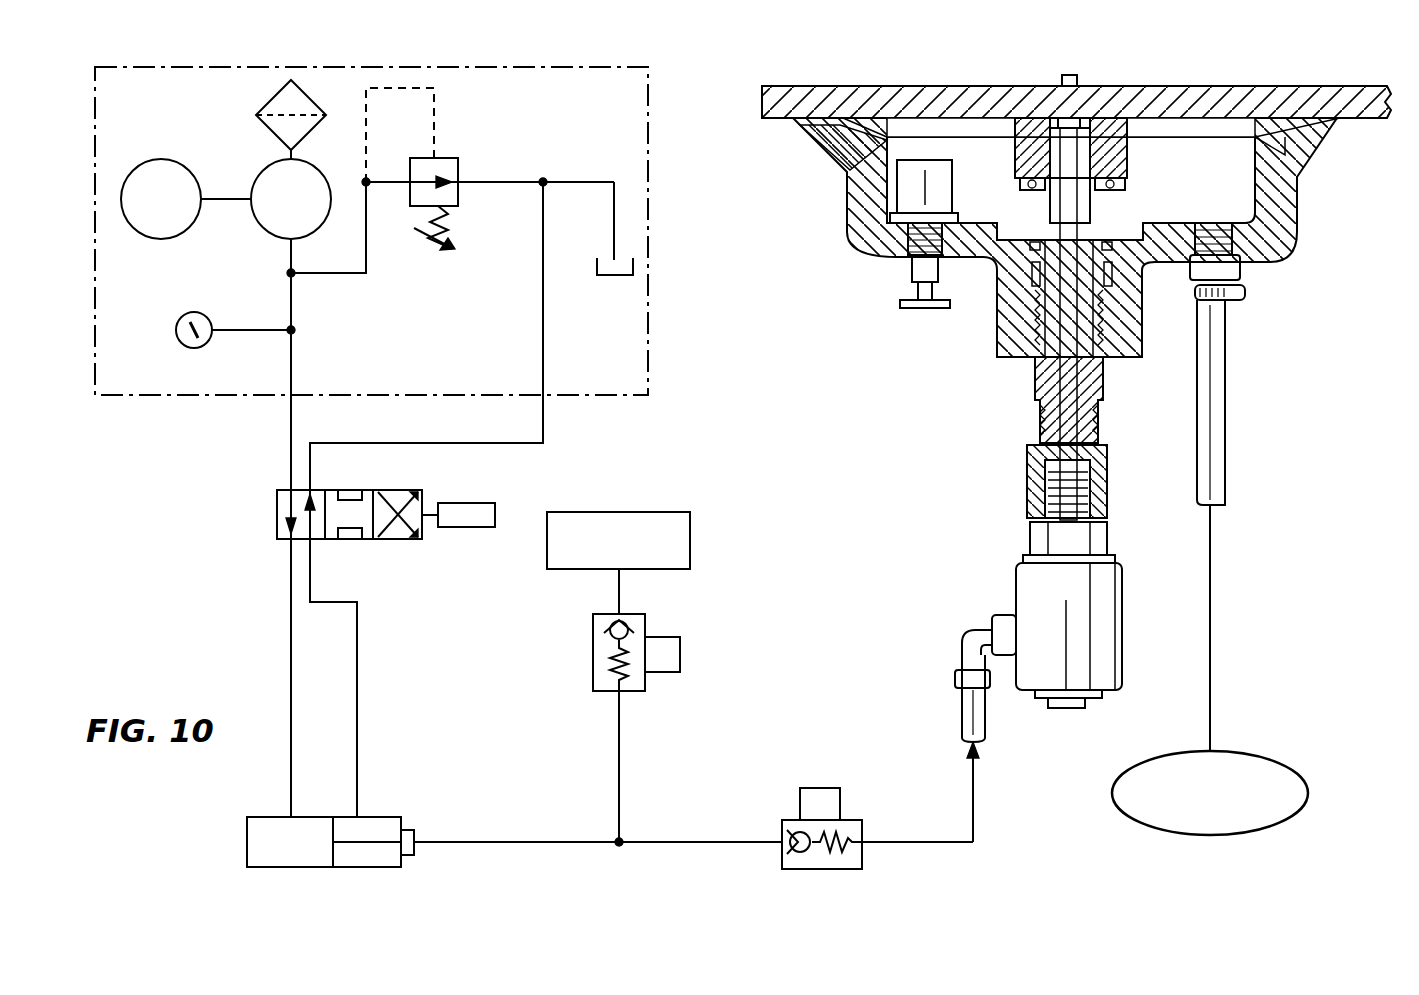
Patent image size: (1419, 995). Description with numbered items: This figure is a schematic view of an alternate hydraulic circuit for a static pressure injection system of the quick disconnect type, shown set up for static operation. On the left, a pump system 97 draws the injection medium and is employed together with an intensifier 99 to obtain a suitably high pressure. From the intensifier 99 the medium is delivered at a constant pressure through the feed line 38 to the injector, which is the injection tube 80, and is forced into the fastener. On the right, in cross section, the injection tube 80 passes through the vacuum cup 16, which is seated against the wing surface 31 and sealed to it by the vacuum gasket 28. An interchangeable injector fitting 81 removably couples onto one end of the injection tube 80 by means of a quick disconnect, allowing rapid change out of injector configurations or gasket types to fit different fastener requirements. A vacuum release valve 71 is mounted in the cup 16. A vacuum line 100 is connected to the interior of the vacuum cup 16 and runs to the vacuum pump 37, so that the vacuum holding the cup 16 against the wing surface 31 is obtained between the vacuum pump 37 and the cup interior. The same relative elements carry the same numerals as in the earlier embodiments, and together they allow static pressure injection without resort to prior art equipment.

The vacuum cup 16 is at (852, 213).
The vacuum gasket 28 is at (830, 150).
The wing surface 31 is at (790, 118).
The vacuum pump 37 is at (1135, 810).
The feed line 38 is at (665, 842).
The vacuum release valve 71 is at (903, 280).
The injection tube 80 is at (1035, 378).
The injector fitting 81 is at (1127, 160).
The pump system 97 is at (177, 395).
The intensifier 99 is at (375, 817).
The vacuum line 100 is at (1225, 380).